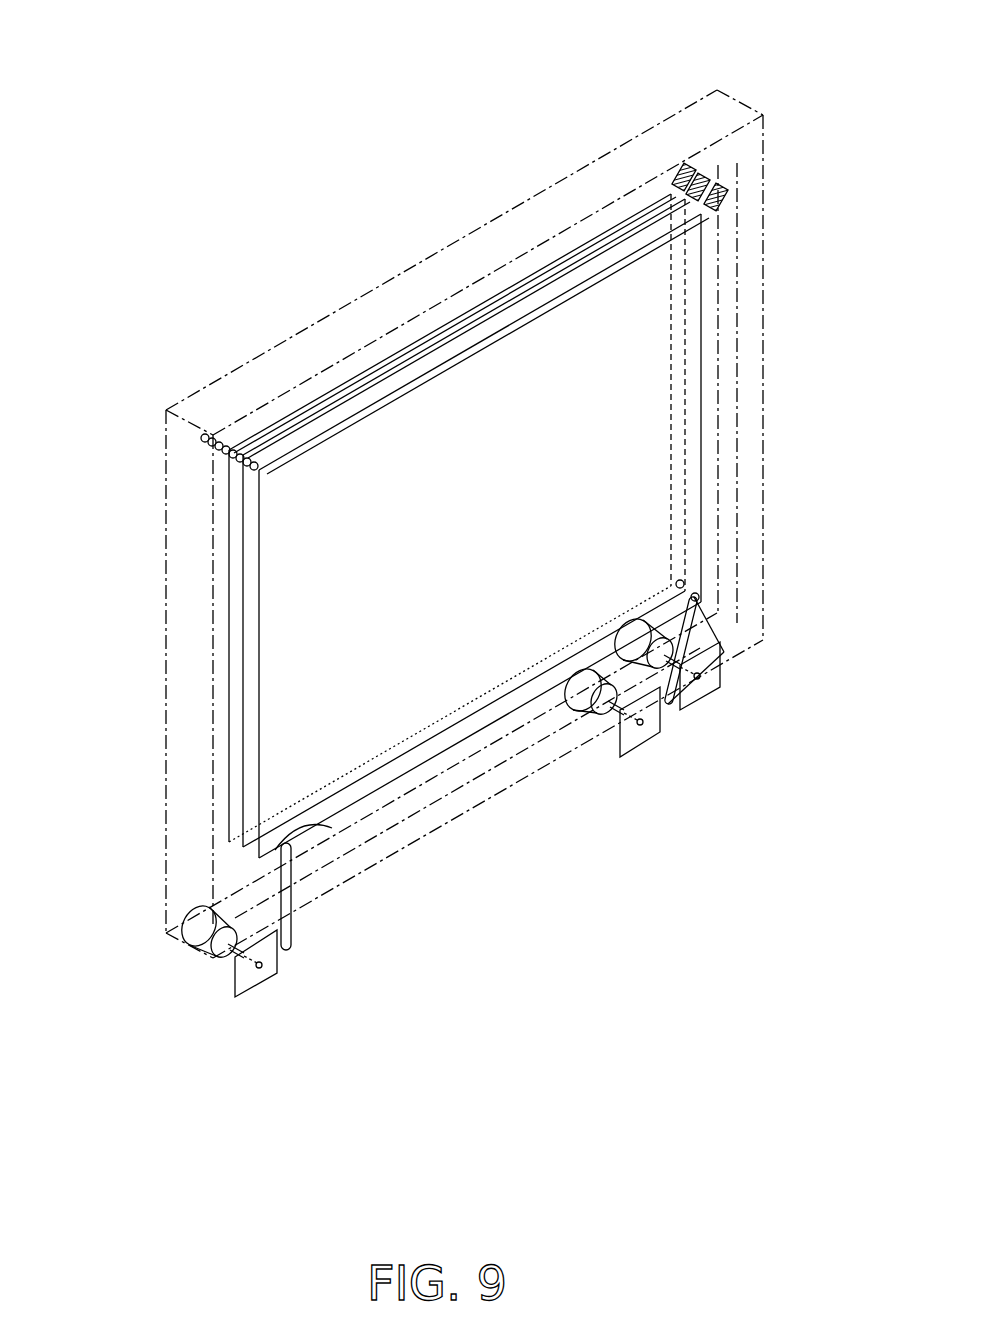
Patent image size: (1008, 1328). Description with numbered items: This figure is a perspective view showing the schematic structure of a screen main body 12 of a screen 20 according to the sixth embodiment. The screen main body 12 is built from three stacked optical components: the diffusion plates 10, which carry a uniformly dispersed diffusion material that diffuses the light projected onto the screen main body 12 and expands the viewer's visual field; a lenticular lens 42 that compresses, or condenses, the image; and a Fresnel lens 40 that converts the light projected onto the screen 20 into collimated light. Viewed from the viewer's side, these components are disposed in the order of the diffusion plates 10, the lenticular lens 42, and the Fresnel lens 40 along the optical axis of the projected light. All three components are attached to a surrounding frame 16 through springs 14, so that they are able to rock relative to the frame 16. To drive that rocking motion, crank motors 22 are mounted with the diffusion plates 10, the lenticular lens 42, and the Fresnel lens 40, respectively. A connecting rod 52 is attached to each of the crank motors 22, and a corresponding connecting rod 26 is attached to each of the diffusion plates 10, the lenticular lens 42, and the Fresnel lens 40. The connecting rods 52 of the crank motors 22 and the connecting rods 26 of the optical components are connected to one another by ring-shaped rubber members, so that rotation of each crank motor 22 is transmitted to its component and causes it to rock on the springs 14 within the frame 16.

The screen 20 is at (380, 91).
The screen main body 12 is at (497, 147).
The Fresnel lens 40 is at (445, 323).
The lenticular lens 42 is at (490, 317).
The diffusion plate 10 is at (538, 307).
The spring 14 is at (690, 165).
The frame 16 is at (752, 338).
The crank motor 22 is at (683, 690).
The connecting rod 26 is at (690, 593).
The connecting rod 52 is at (725, 648).